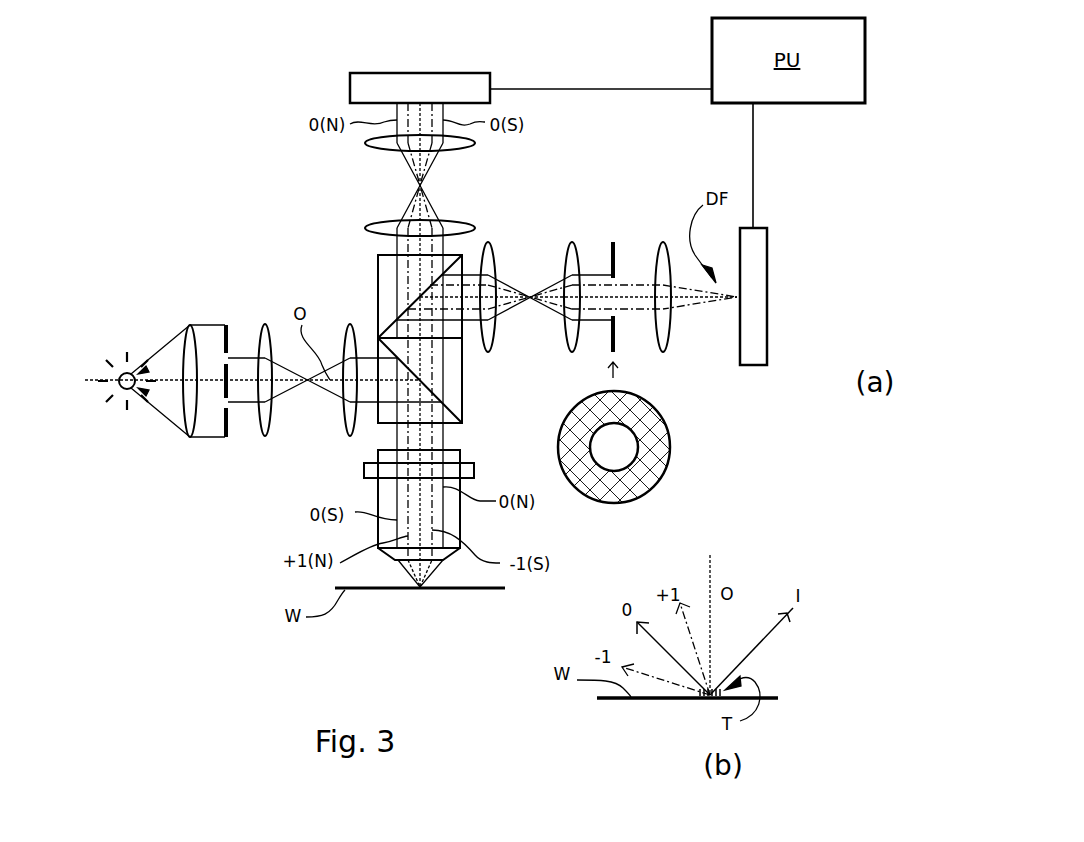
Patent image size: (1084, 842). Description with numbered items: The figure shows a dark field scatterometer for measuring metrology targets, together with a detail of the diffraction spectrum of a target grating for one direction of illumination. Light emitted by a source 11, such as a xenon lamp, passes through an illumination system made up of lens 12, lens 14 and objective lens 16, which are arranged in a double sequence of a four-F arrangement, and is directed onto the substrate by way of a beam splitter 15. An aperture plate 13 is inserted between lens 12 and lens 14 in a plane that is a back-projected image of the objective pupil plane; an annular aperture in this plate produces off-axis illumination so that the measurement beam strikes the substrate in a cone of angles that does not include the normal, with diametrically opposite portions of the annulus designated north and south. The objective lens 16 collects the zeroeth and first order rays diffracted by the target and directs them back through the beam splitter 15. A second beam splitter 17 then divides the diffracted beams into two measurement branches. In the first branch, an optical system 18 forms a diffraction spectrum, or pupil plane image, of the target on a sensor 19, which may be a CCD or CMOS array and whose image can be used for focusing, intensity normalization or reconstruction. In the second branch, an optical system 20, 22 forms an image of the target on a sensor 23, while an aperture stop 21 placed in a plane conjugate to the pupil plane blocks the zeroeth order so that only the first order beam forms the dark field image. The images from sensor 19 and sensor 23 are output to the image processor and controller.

The source 11 is at (127, 392).
The lens 12 is at (190, 437).
The aperture plate 13 is at (226, 440).
The lens 14 is at (357, 444).
The beam splitter 15 is at (462, 385).
The objective lens 16 is at (460, 515).
The second beam splitter 17 is at (378, 292).
The optical system 18 is at (478, 235).
The sensor 19 is at (483, 73).
The optical system 20 is at (480, 355).
The aperture stop 21 is at (613, 242).
The optical system 22 is at (662, 352).
The sensor 23 is at (767, 245).